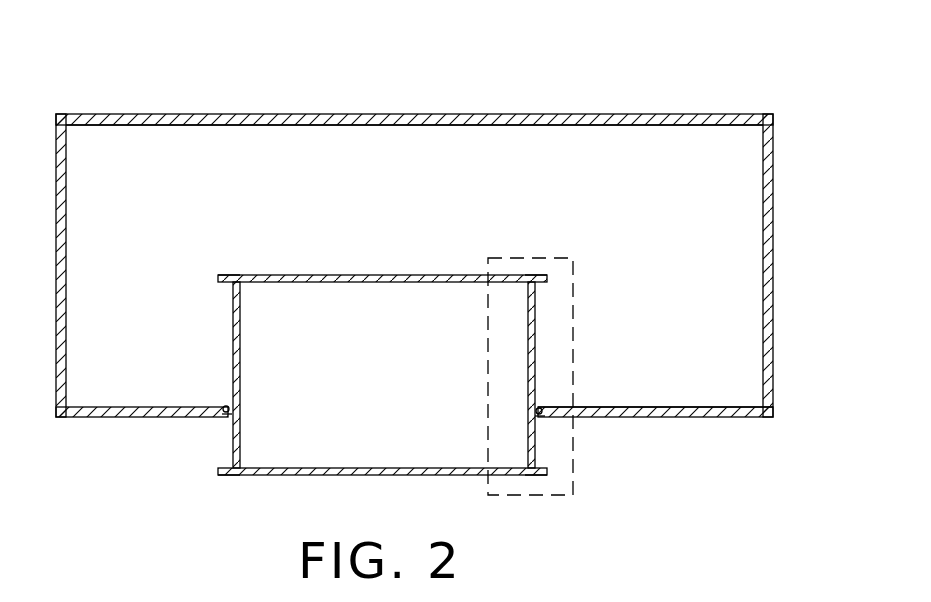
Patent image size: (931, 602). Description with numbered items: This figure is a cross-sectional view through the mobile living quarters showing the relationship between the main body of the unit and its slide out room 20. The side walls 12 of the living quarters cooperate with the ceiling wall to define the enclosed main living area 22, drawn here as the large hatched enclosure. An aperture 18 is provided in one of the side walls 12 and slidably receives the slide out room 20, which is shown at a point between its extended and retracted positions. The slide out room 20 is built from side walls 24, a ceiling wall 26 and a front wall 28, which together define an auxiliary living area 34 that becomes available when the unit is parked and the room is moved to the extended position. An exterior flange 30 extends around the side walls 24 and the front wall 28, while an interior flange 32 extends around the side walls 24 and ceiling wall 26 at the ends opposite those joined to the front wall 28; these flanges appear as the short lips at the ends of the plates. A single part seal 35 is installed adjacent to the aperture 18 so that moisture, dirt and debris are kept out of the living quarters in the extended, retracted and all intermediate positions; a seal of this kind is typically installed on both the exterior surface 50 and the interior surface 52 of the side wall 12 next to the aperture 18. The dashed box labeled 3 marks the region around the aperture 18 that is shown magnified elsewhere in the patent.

The side walls 12 is at (772, 136).
The main living area 22 is at (272, 140).
The slide out room 20 is at (360, 398).
The side walls 24 is at (242, 319).
The ceiling wall 26 is at (347, 275).
The front wall 28 is at (350, 476).
The exterior flange 30 is at (220, 478).
The interior flange 32 is at (226, 282).
The auxiliary living area 34 is at (352, 396).
The single part seal 35 is at (222, 422).
The aperture 18 is at (539, 417).
The detail region 3 is at (522, 258).
The exterior surface 50 is at (624, 418).
The interior surface 52 is at (613, 407).